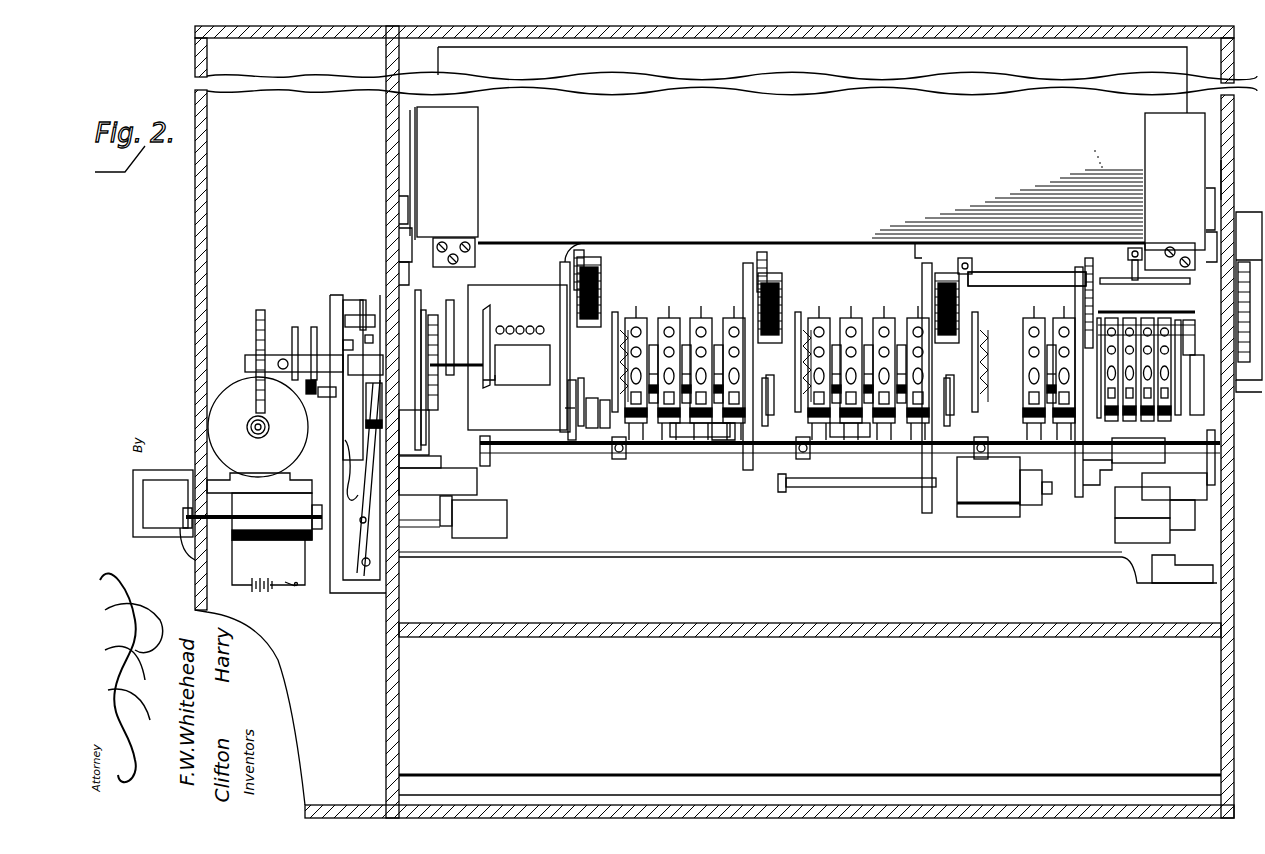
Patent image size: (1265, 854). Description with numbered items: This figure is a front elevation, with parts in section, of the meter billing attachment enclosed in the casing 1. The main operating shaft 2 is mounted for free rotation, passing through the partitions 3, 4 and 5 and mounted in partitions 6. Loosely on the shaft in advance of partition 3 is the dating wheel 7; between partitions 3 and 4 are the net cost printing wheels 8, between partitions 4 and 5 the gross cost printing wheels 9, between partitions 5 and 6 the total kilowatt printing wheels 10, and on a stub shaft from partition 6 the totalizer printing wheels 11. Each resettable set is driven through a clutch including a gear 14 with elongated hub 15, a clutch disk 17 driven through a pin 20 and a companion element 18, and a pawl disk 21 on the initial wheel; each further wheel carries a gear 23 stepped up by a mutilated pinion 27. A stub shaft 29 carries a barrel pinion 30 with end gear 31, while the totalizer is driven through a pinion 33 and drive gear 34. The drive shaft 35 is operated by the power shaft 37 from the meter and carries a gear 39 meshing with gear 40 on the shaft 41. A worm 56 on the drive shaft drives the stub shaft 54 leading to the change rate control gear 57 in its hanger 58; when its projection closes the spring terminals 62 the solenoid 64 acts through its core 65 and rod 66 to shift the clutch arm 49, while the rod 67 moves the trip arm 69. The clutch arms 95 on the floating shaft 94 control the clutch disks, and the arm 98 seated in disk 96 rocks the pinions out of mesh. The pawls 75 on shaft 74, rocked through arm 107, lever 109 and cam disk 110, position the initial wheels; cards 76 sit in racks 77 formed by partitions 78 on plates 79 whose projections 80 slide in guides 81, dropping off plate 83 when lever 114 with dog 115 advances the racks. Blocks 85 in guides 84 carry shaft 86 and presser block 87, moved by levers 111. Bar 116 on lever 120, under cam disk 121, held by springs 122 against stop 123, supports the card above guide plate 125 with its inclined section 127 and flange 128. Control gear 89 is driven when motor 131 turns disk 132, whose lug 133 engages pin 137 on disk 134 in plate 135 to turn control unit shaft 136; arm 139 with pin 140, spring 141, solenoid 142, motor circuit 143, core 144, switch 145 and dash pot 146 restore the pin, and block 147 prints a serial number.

The casing 1 is at (1228, 178).
The main operating shaft 2 is at (733, 318).
The partition 3 is at (564, 262).
The partition 4 is at (748, 263).
The partition 5 is at (930, 263).
The partition 6 is at (920, 243).
The dating wheel 7 is at (525, 385).
The net cost printing wheels 8 is at (662, 318).
The gross cost printing wheels 9 is at (851, 318).
The total kilowatt printing wheels 10 is at (1060, 318).
The totalizer printing wheels 11 is at (1128, 318).
The clutch gear 14 is at (763, 409).
The elongated hub 15 is at (594, 419).
The clutch disk 17 is at (792, 350).
The arm 18 is at (852, 395).
The pin 20 is at (607, 420).
The pawl disk 21 is at (624, 318).
The gear 23 is at (688, 318).
The mutilated pinion 27 is at (692, 440).
The stub shaft 29 is at (594, 238).
The barrel pinion 30 is at (596, 275).
The end gear 31 is at (585, 258).
The pinion 33 is at (1145, 272).
The drive gear 34 is at (1098, 296).
The drive shaft 35 is at (1038, 280).
The power shaft 37 is at (968, 262).
The gear 39 is at (1248, 240).
The gear 40 is at (1248, 392).
The shaft 41 is at (1245, 321).
The clutch arm 49 is at (780, 490).
The stub shaft 54 is at (1150, 300).
The worm 56 is at (1135, 263).
The change rate control gear 57 is at (1130, 578).
The hanger 58 is at (1188, 320).
The spring terminals 62 is at (1162, 583).
The solenoid 64 is at (990, 517).
The core 65 is at (1036, 505).
The rod 66 is at (845, 487).
The rod 67 is at (1083, 490).
The trip arm 69 is at (1097, 472).
The shaft of step-up pawl 74 is at (590, 453).
The pawls 75 is at (619, 459).
The card 76 is at (811, 193).
The rack 77 is at (428, 176).
The vertical partitions 78 is at (430, 150).
The plates 79 is at (420, 300).
The guiding projections 80 is at (410, 240).
The guides 81 is at (408, 204).
The plate 83 is at (476, 258).
The guides 84 is at (374, 335).
The blocks 85 is at (349, 342).
The shaft 86 is at (475, 362).
The presser block 87 is at (490, 312).
The gear 89 is at (437, 360).
The floating shaft 94 is at (723, 431).
The clutch arms 95 is at (565, 410).
The disk 96 is at (457, 334).
The arm 98 is at (181, 549).
The arm 107 is at (440, 462).
The lever 109 is at (430, 430).
The cam disk 110 is at (466, 330).
The levers 111 is at (1236, 434).
The lever 114 is at (365, 360).
The dog 115 is at (428, 373).
The bar 116 is at (482, 540).
The lever 120 is at (1195, 520).
The cam disk 121 is at (363, 322).
The springs 122 is at (445, 525).
The stop 123 is at (477, 484).
The guide plate 125 is at (810, 655).
The forwardly inclined section 127 is at (760, 616).
The flange 128 is at (574, 775).
The motor 131 is at (240, 385).
The disk 132 is at (292, 327).
The offset lug 133 is at (306, 395).
The disk 134 is at (314, 327).
The plate 135 is at (345, 455).
The control unit shaft 136 is at (486, 382).
The spring-pressed pin 137 is at (318, 395).
The arm 139 is at (345, 440).
The pin 140 is at (366, 405).
The spring 141 is at (340, 480).
The solenoid 142 is at (278, 540).
The motor circuit 143 is at (297, 590).
The core 144 is at (320, 540).
The switch 145 is at (185, 532).
The dash pot 146 is at (350, 465).
The block 147 is at (526, 292).